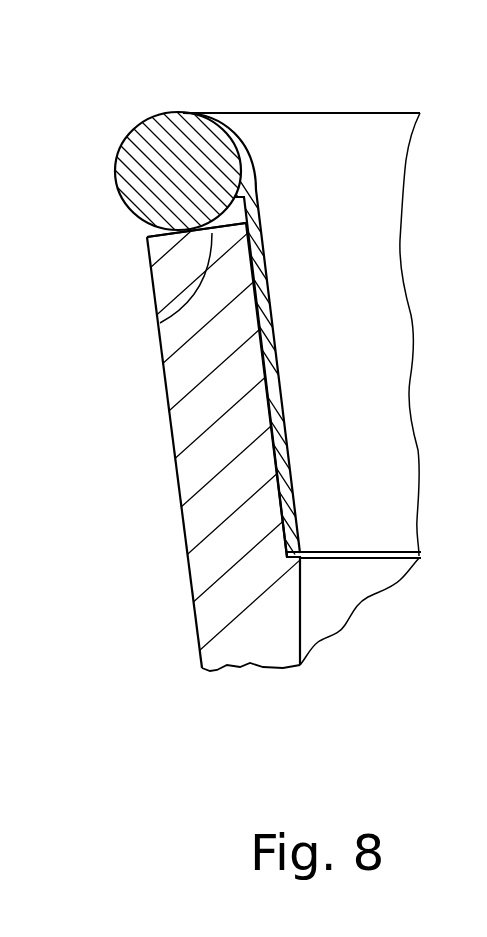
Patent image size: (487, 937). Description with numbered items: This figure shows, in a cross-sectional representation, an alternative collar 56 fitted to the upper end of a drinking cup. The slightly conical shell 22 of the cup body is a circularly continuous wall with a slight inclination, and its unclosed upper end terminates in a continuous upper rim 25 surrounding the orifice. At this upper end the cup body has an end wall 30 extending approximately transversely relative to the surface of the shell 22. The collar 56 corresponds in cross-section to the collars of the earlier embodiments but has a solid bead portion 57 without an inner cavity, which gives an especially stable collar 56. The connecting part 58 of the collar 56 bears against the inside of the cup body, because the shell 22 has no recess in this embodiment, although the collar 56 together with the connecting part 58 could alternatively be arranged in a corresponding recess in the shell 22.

The shell 22 is at (237, 650).
The upper rim 25 is at (172, 270).
The end wall 30 is at (162, 322).
The collar 56 is at (243, 285).
The solid bead portion 57 is at (172, 147).
The connecting part 58 is at (272, 365).